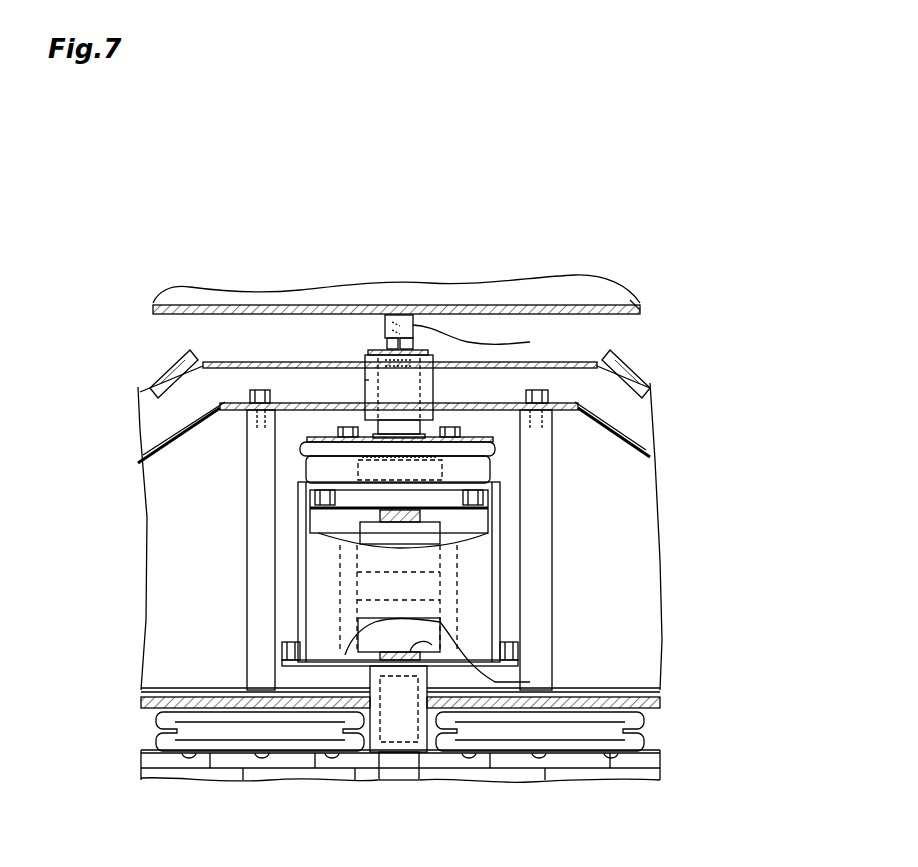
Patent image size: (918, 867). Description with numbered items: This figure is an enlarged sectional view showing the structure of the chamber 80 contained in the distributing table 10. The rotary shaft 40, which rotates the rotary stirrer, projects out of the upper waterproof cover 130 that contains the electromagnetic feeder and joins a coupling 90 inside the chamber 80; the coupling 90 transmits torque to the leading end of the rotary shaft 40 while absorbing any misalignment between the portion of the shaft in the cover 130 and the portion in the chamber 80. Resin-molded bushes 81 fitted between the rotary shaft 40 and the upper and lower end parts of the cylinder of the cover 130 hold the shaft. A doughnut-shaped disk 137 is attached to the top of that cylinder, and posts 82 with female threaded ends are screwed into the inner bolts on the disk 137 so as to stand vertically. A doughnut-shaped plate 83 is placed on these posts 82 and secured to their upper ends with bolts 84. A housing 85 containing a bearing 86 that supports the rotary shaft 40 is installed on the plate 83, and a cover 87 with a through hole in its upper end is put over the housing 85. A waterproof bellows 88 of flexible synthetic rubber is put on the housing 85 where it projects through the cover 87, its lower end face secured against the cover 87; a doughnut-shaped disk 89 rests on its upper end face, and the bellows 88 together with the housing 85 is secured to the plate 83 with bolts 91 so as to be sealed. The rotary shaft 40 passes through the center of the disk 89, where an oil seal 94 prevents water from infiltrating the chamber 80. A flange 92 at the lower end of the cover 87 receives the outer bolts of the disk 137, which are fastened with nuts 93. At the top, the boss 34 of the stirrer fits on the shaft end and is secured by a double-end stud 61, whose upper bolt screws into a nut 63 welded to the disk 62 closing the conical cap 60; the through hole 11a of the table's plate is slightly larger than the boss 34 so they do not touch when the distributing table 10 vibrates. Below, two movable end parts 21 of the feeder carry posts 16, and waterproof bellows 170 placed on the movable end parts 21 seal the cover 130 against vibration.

The distributing table 10 is at (640, 435).
The through hole 11a is at (357, 392).
The post 16 is at (258, 508).
The movable end part 21 is at (230, 758).
The boss 34 is at (475, 375).
The rotary shaft 40 is at (402, 772).
The conical cap 60 is at (642, 300).
The double-end stud 61 is at (426, 346).
The disk 62 is at (227, 305).
The nut 63 is at (385, 322).
The chamber 80 is at (427, 505).
The bush 81 is at (510, 682).
The post 82 is at (498, 575).
The plate 83 is at (500, 526).
The bolt 84 is at (318, 498).
The housing 85 is at (480, 472).
The bearing 86 is at (335, 470).
The cover 87 is at (300, 570).
The waterproof bellows 88 is at (498, 448).
The disk 89 is at (318, 436).
The coupling 90 is at (300, 530).
The bolt 91 is at (345, 427).
The flange 92 is at (290, 655).
The nut 93 is at (290, 642).
The oil seal 94 is at (425, 425).
The upper waterproof cover 130 is at (660, 767).
The disk 137 is at (498, 672).
The waterproof bellows 170 is at (175, 738).